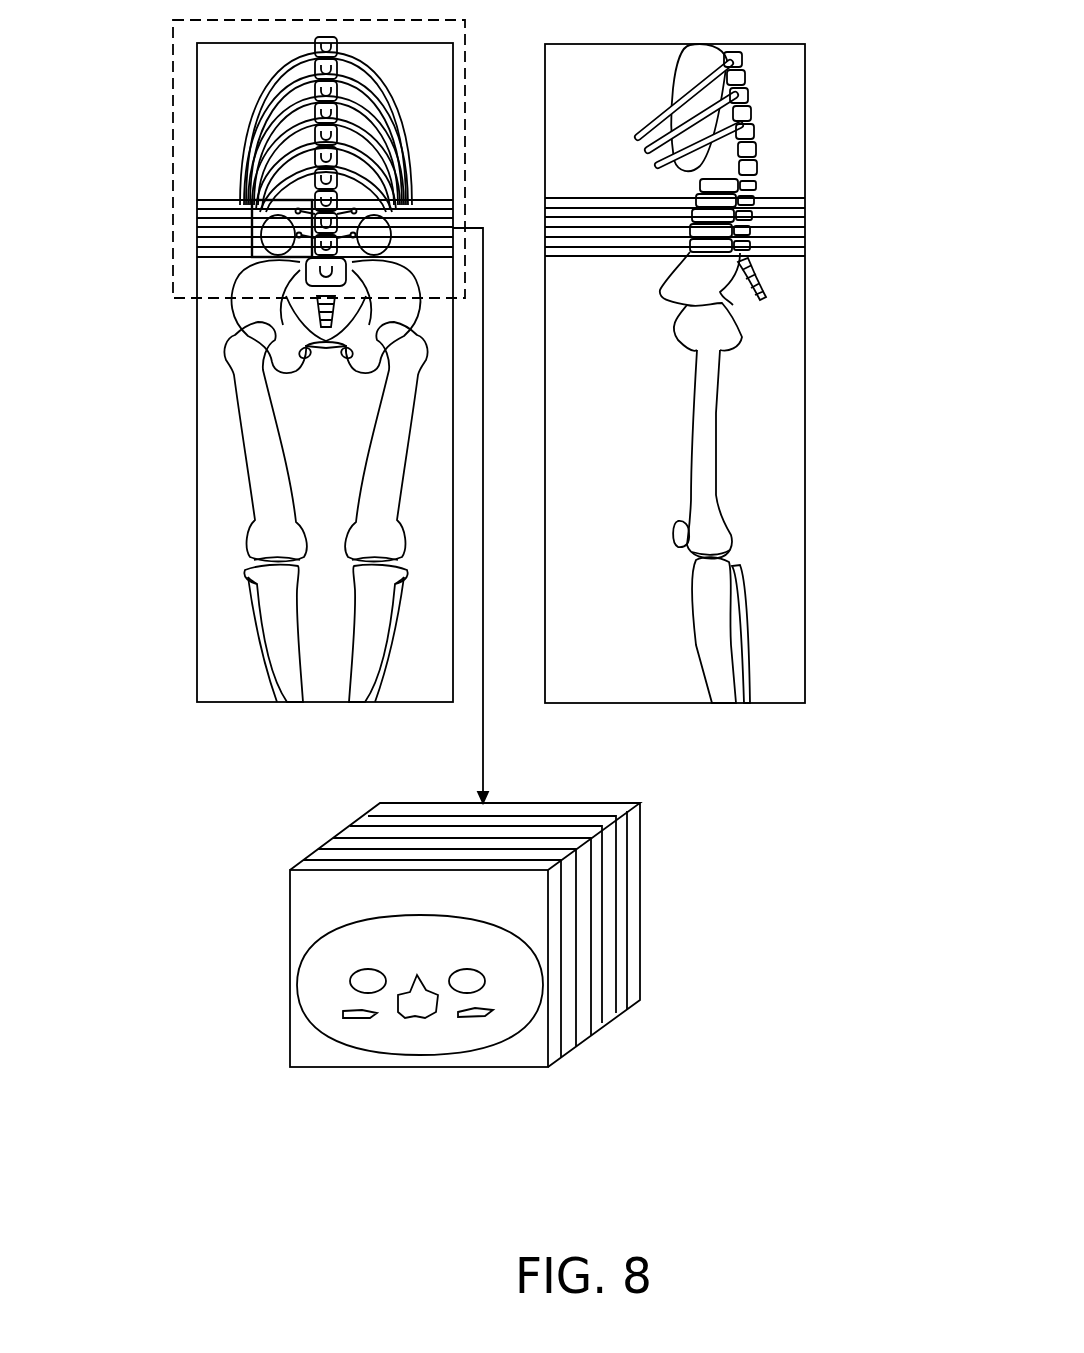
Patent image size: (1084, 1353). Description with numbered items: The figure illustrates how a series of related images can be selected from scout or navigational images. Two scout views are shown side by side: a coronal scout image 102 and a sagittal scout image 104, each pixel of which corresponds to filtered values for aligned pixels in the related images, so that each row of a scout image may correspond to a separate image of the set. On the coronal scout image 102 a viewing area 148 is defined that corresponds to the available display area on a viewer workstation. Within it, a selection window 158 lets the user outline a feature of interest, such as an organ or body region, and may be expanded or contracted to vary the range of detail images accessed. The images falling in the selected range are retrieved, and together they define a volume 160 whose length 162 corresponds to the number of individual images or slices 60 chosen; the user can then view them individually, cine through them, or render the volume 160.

The coronal scout image 102 is at (197, 472).
The sagittal scout image 104 is at (805, 358).
The viewing area 148 is at (172, 115).
The selection window 158 is at (252, 257).
The length 162 is at (162, 143).
The volume 160 is at (570, 1055).
The slices 60 is at (624, 988).